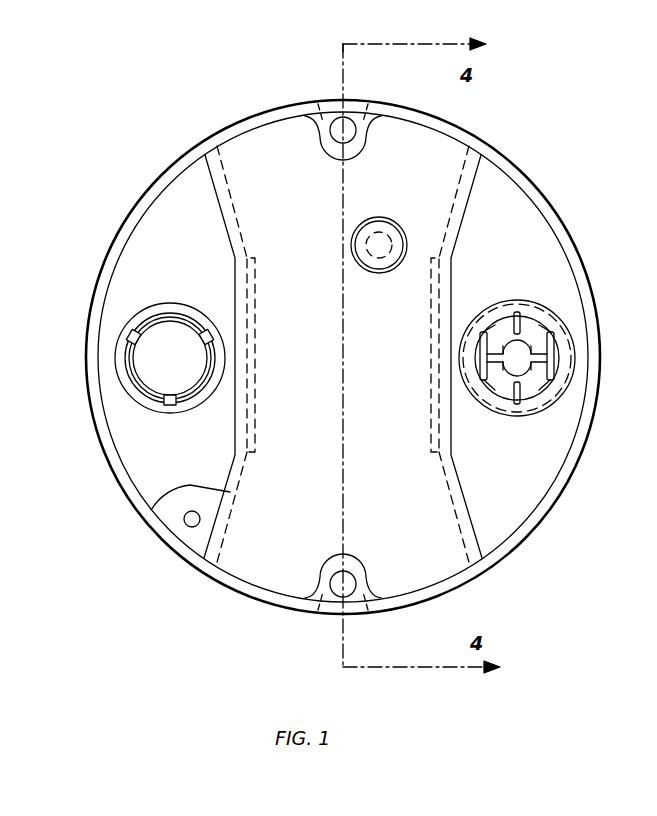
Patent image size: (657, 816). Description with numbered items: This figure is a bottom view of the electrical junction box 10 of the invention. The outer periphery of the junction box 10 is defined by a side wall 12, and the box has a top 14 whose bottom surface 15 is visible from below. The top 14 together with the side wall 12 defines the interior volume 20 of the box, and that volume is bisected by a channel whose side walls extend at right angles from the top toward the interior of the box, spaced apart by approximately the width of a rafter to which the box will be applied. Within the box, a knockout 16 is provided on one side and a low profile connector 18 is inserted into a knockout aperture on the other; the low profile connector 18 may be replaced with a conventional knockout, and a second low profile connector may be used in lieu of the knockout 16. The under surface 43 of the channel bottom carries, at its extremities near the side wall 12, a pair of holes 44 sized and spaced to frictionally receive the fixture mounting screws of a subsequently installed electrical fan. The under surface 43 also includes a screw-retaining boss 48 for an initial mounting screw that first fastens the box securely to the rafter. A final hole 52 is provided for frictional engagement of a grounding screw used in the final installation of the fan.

The electrical junction box 10 is at (140, 62).
The side wall 12 is at (522, 180).
The top 14 is at (540, 245).
The bottom surface 15 is at (192, 252).
The knockout 16 is at (143, 308).
The low profile connector 18 is at (543, 307).
The volume 20 is at (150, 455).
The under surface 43 is at (405, 424).
The holes 44 is at (338, 122).
The screw-retaining boss 48 is at (378, 228).
The final hole 52 is at (186, 526).